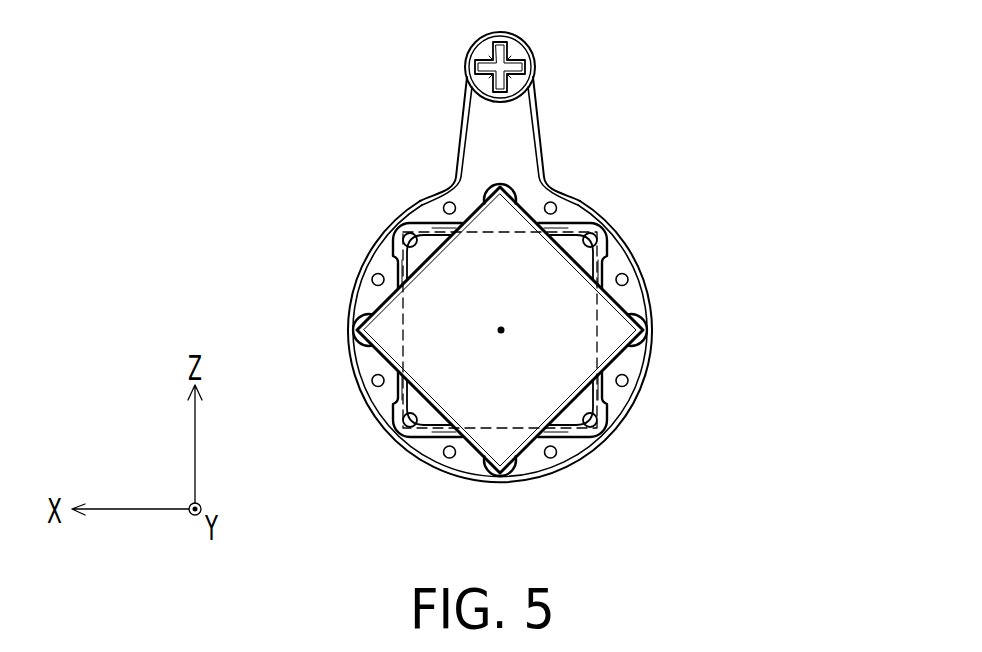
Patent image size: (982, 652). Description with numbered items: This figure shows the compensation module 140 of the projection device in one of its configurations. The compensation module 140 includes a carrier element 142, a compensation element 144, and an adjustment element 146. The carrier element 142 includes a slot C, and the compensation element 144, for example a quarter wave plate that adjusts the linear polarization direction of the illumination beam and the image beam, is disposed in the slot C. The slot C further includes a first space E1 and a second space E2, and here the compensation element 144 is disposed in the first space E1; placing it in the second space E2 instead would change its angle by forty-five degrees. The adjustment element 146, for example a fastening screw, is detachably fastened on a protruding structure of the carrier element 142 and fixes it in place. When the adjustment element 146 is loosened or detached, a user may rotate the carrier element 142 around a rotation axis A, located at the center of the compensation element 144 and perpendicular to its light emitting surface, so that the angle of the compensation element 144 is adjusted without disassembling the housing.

The compensation module 140 is at (554, 280).
The carrier element 142 is at (433, 217).
The compensation element 144 is at (566, 326).
The adjustment element 146 is at (532, 56).
The rotation axis A is at (501, 330).
The slot C is at (571, 252).
The first space E1 is at (600, 261).
The second space E2 is at (594, 327).